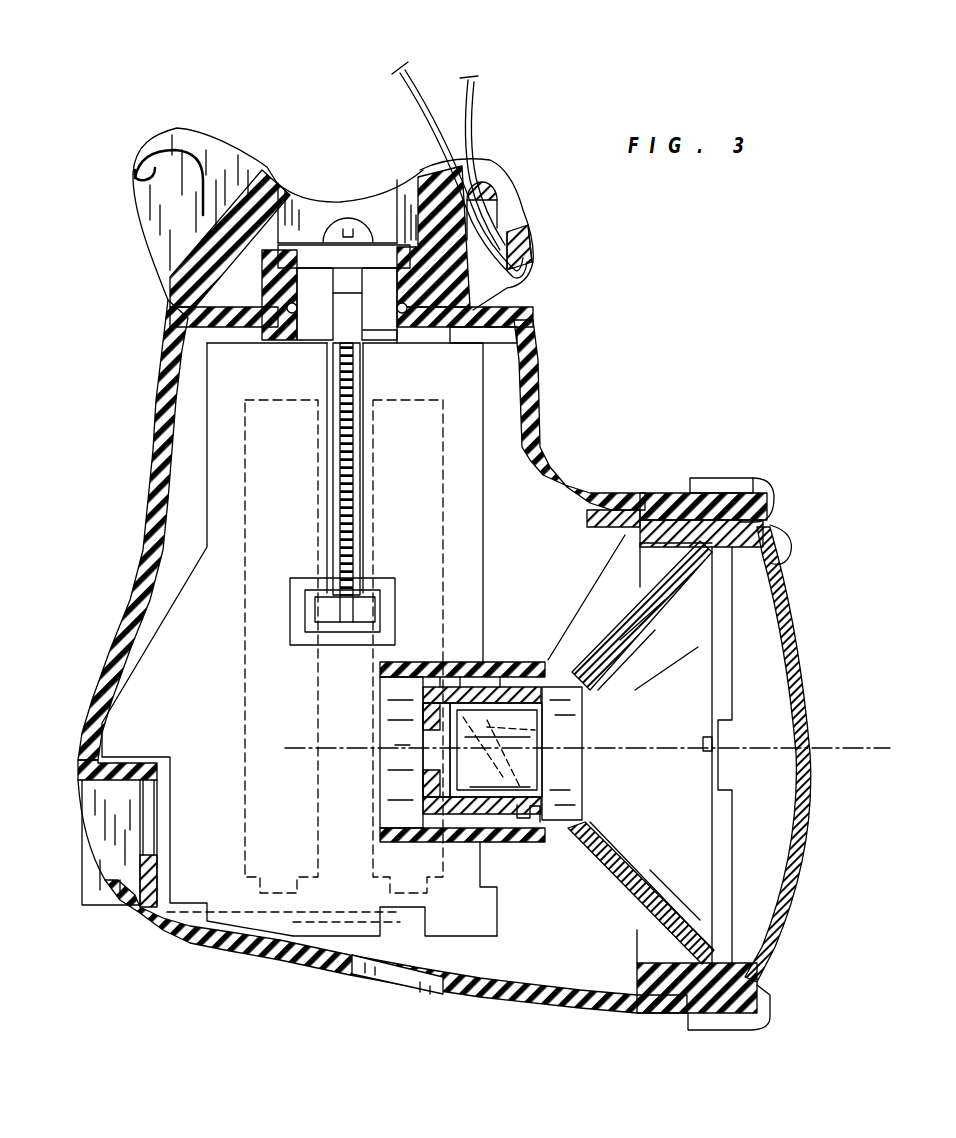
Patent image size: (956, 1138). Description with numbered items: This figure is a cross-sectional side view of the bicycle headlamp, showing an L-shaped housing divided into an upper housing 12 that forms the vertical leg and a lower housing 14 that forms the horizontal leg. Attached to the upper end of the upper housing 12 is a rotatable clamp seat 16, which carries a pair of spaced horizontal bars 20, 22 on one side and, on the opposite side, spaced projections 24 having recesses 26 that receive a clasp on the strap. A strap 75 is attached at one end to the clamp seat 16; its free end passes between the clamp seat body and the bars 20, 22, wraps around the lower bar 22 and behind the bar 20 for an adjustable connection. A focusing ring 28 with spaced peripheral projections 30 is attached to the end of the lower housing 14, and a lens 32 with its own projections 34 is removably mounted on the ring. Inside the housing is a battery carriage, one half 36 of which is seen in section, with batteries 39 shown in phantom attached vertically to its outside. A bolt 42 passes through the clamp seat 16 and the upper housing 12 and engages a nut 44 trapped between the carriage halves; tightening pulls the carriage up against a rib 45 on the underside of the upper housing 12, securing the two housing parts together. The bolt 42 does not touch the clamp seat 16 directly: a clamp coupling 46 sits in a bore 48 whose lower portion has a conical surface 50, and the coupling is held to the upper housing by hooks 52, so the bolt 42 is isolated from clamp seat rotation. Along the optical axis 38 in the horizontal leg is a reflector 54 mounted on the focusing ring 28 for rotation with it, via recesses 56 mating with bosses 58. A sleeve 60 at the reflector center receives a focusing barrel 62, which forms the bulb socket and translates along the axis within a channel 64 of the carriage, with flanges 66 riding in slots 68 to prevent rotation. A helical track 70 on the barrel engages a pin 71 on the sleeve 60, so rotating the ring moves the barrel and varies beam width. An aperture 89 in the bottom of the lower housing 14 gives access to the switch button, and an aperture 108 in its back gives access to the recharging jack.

The upper housing 12 is at (535, 377).
The lower housing 14 is at (594, 1003).
The clamp seat 16 is at (268, 165).
The horizontal bar 20 is at (490, 165).
The horizontal bar 22 is at (533, 257).
The projections 24 is at (155, 145).
The recesses 26 is at (185, 173).
The focusing ring 28 is at (712, 490).
The projections 30 is at (760, 482).
The lens 32 is at (805, 612).
The projections 34 is at (792, 540).
The battery carriage half 36 is at (485, 517).
The optical axis 38 is at (830, 748).
The batteries 39 is at (447, 478).
The bolt 42 is at (360, 228).
The nut 44 is at (310, 605).
The rib 45 is at (500, 336).
The clamp coupling 46 is at (395, 243).
The bore 48 is at (297, 185).
The conical surface 50 is at (303, 257).
The hooks 52 is at (400, 337).
The reflector 54 is at (623, 597).
The recesses 56 is at (703, 744).
The bosses 58 is at (714, 745).
The sleeve 60 is at (562, 668).
The focusing barrel 62 is at (470, 842).
The channel 64 is at (395, 775).
The flanges 66 is at (425, 660).
The slots 68 is at (460, 662).
The helical track 70 is at (537, 730).
The pin 71 is at (518, 802).
The strap 75 is at (405, 72).
The aperture 89 is at (400, 983).
The aperture 108 is at (140, 830).